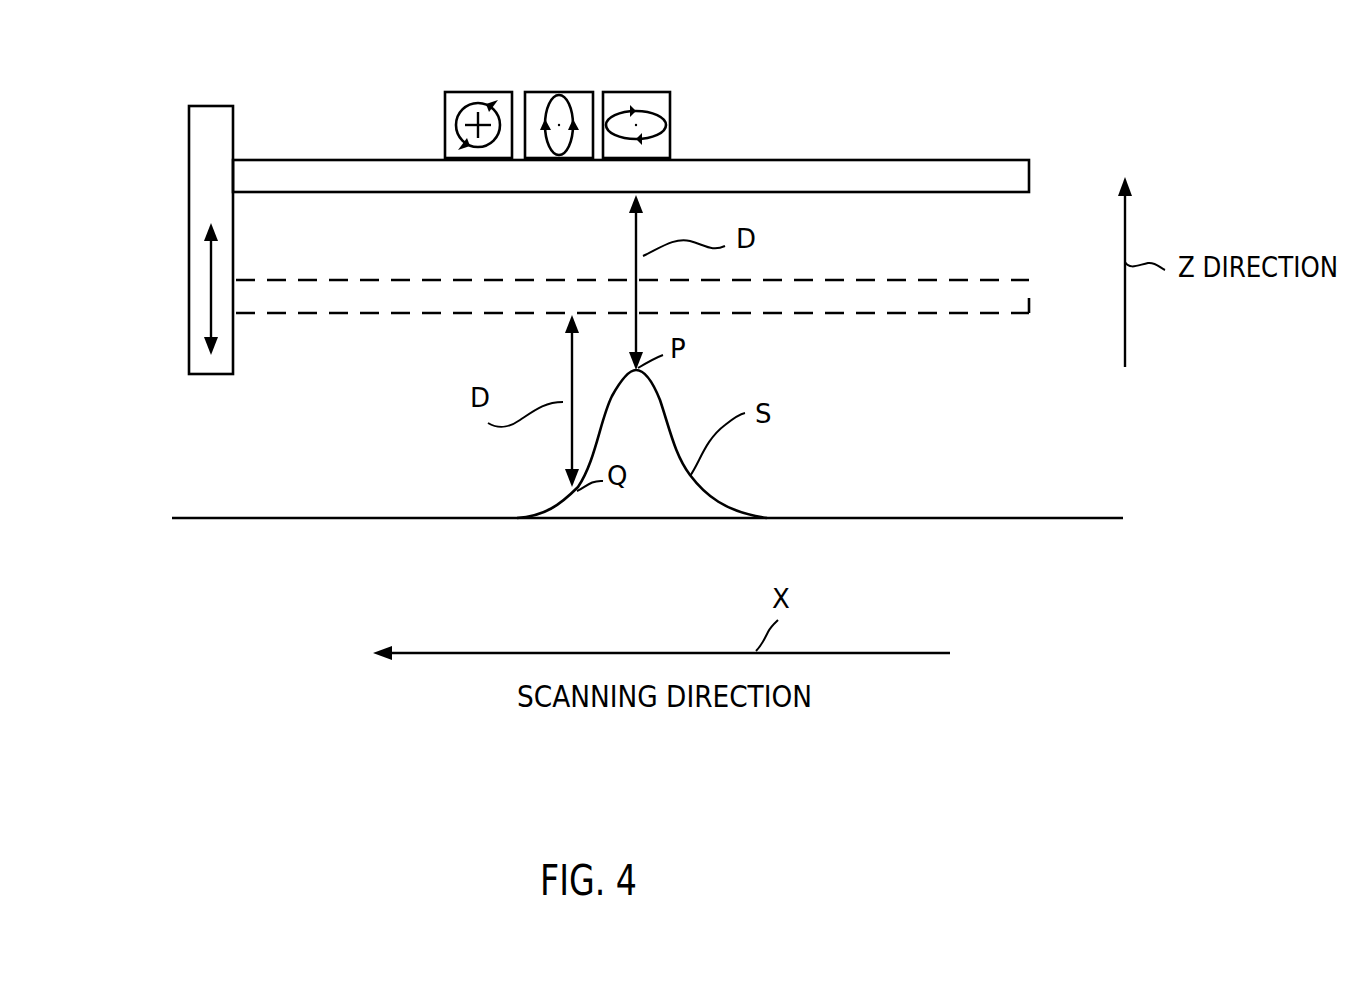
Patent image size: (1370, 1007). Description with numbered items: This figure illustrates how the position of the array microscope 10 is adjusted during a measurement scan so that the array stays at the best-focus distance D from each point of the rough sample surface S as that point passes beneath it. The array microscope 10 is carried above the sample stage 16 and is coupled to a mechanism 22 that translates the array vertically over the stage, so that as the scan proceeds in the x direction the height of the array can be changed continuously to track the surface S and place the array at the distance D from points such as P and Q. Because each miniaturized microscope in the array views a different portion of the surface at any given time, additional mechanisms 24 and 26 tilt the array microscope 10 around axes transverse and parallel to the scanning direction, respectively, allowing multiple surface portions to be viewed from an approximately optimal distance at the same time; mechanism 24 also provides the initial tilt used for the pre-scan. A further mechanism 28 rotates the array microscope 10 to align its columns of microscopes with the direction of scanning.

The array microscope 10 is at (987, 158).
The sample stage 16 is at (1043, 518).
The mechanism for translating the array microscope vertically 22 is at (203, 263).
The mechanism for tilting the array microscope in the x direction 24 is at (472, 91).
The mechanism for tilting the array microscope in the y direction 26 is at (548, 91).
The rotating mechanism 28 is at (635, 91).